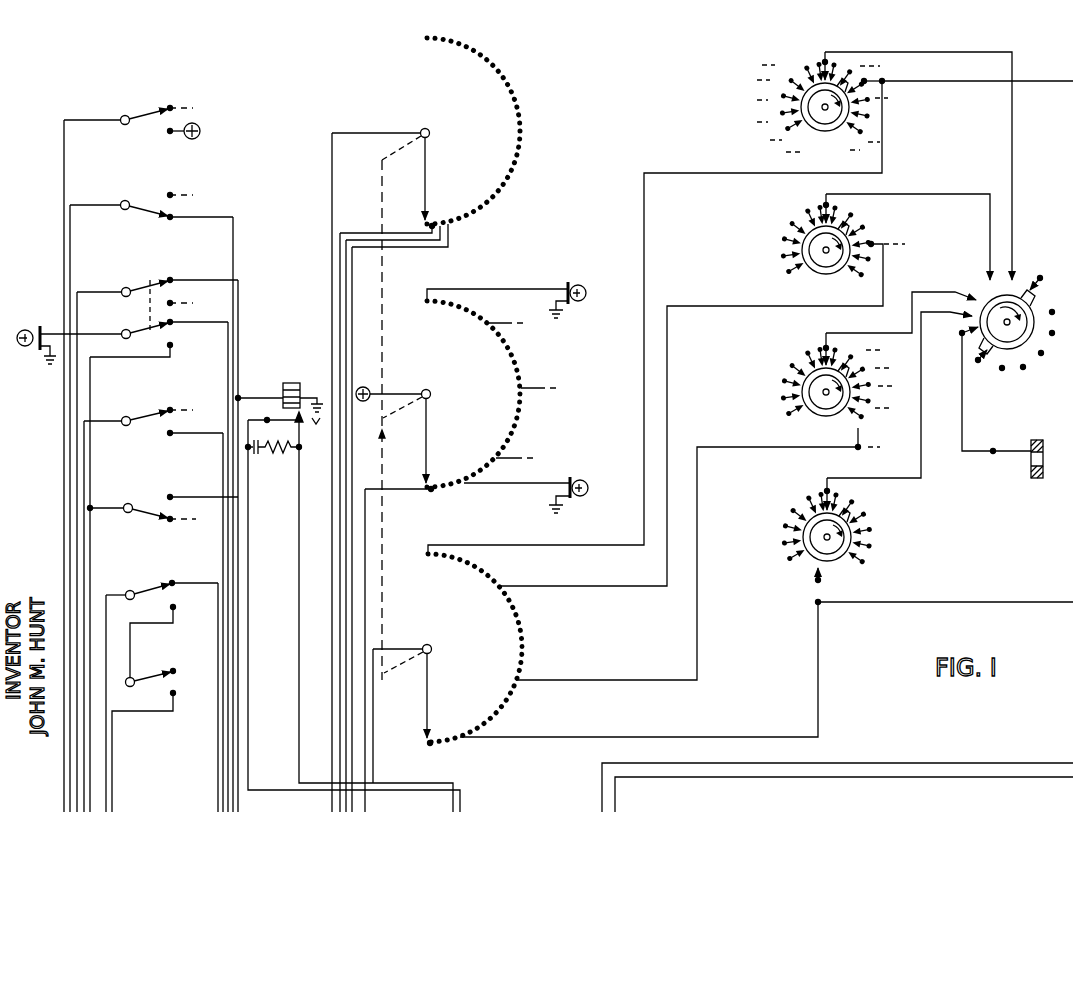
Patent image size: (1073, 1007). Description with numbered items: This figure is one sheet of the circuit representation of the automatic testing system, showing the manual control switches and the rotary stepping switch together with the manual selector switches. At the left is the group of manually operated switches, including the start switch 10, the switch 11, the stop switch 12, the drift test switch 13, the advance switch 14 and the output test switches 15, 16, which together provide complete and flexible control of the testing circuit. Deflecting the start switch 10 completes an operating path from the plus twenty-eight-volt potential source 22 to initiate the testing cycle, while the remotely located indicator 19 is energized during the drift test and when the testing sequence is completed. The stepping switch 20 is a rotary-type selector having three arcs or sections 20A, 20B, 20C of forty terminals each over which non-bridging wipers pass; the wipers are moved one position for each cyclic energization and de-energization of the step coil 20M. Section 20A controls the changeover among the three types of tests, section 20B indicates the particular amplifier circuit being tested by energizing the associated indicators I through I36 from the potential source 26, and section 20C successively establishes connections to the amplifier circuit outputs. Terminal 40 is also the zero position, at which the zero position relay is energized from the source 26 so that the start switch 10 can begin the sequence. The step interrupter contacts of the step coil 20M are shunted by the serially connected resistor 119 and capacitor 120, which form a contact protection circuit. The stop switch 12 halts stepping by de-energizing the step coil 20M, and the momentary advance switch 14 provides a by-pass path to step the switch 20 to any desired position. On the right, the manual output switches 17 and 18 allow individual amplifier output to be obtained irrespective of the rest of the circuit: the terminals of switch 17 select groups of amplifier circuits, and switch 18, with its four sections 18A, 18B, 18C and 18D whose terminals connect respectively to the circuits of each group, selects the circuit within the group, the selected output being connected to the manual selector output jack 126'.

The start switch 10 is at (163, 112).
The manually operated switch 11 is at (156, 200).
The stop switch 12 is at (156, 324).
The drift test switch 13 is at (134, 412).
The advance switch 14 is at (162, 498).
The output test switch 15 is at (136, 585).
The output test switch 16 is at (138, 673).
The indicator 19 is at (26, 324).
The plus 28-volt potential source 22 is at (199, 124).
The stepping switch 20 is at (702, 390).
The section of stepping switch 20A is at (426, 142).
The section of stepping switch 20B is at (476, 388).
The section of stepping switch 20C is at (723, 411).
The step coil 20M is at (288, 383).
The plus 28-volt potential source 26 is at (372, 385).
The terminal 40 / zero position 40 is at (428, 226).
The resistor 119 is at (290, 466).
The capacitor 120 is at (254, 458).
The indicator I is at (590, 284).
The indicator I36 is at (604, 478).
The manual output switch 17 is at (1024, 282).
The manual output switch 18 is at (870, 328).
The section of switch 18 18A is at (866, 75).
The section of switch 18 18B is at (870, 226).
The section of switch 18 18C is at (858, 362).
The section of switch 18 18D is at (858, 502).
The manual selector output jack 126' is at (1039, 445).